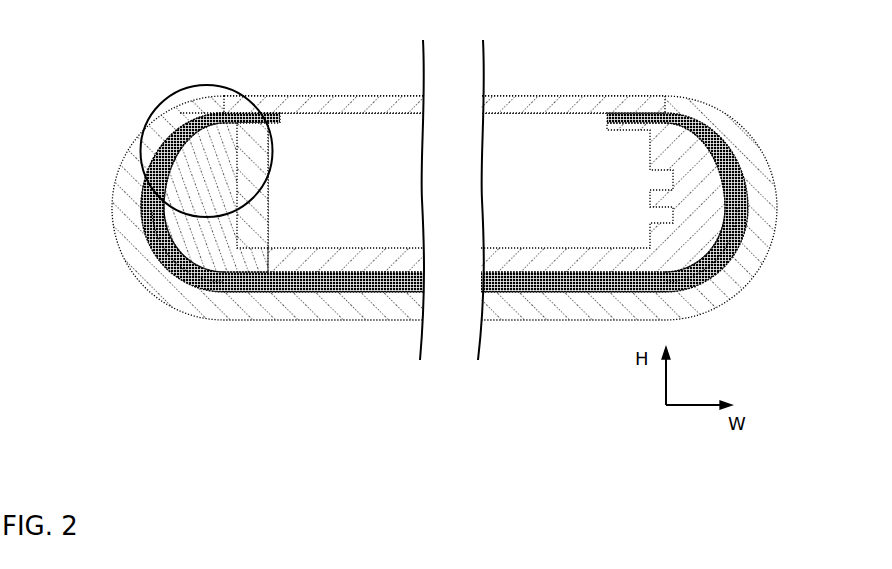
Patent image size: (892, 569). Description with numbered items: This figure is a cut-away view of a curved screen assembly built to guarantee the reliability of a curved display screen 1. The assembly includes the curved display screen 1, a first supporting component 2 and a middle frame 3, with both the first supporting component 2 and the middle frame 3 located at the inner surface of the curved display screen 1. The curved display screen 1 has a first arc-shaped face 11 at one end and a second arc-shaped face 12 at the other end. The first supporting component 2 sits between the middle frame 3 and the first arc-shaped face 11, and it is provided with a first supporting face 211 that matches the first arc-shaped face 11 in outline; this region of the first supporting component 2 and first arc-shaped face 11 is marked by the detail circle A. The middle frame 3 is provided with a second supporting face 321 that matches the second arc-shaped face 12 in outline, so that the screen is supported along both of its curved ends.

The curved display screen 1 is at (347, 280).
The first arc-shaped face 11 is at (163, 235).
The second arc-shaped face 12 is at (733, 232).
The first supporting component 2 is at (195, 193).
The first supporting face 211 is at (157, 193).
The middle frame 3 is at (558, 257).
The second supporting face 321 is at (720, 182).
The detail region A is at (175, 110).